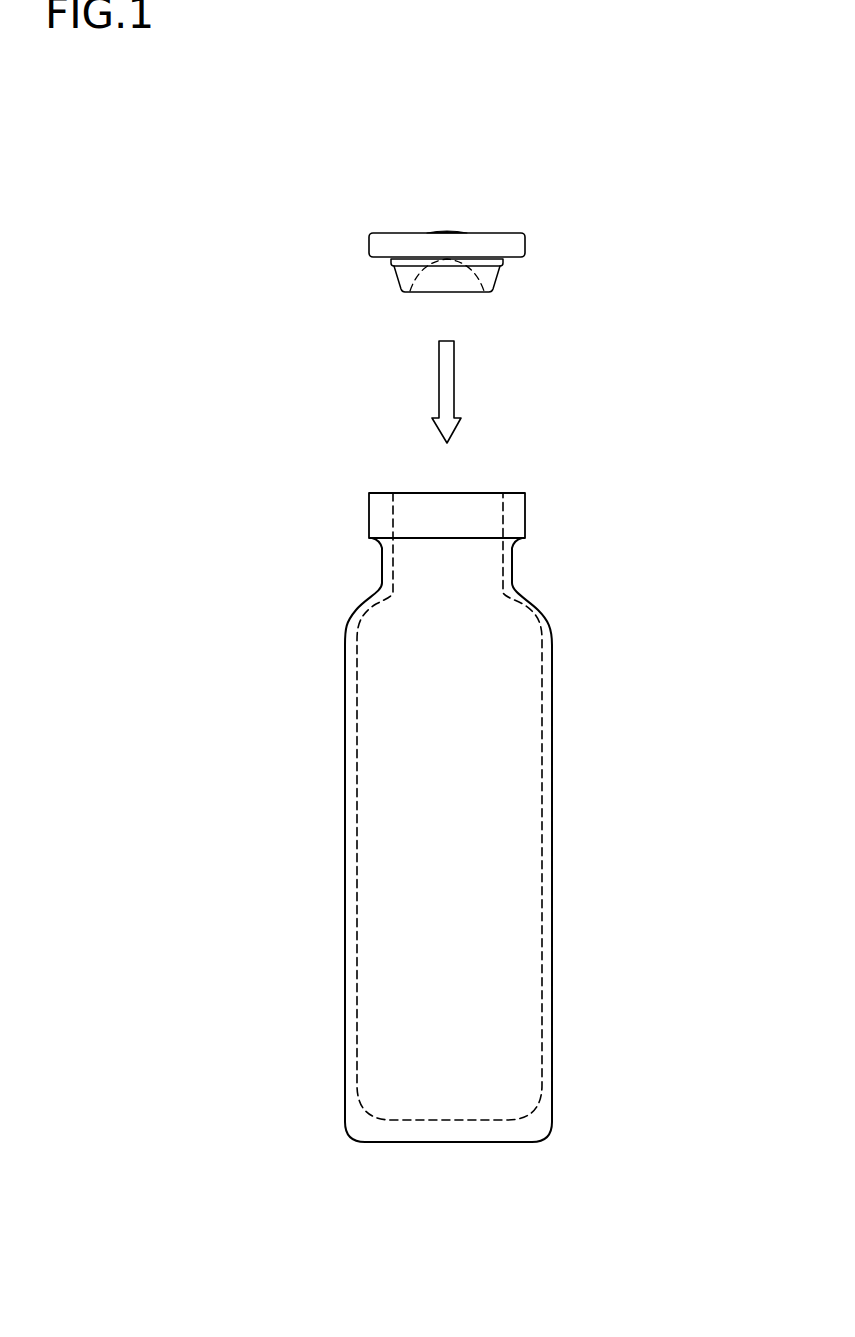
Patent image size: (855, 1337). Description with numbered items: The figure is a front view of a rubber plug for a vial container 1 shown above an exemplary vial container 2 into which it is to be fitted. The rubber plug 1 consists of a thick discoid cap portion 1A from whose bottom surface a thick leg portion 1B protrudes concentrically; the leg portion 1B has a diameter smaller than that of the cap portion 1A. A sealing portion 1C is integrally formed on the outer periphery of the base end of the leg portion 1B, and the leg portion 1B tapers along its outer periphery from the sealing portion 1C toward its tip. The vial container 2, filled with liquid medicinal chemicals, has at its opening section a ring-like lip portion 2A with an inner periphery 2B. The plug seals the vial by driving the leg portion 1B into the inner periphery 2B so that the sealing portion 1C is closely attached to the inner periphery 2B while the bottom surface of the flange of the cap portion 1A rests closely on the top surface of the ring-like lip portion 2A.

The rubber plug for a vial container 1 is at (458, 235).
The cap portion 1A is at (525, 245).
The leg portion 1B is at (500, 282).
The sealing portion 1C is at (392, 263).
The vial container 2 is at (464, 782).
The ring-like lip portion 2A is at (368, 515).
The inner periphery 2B is at (394, 515).